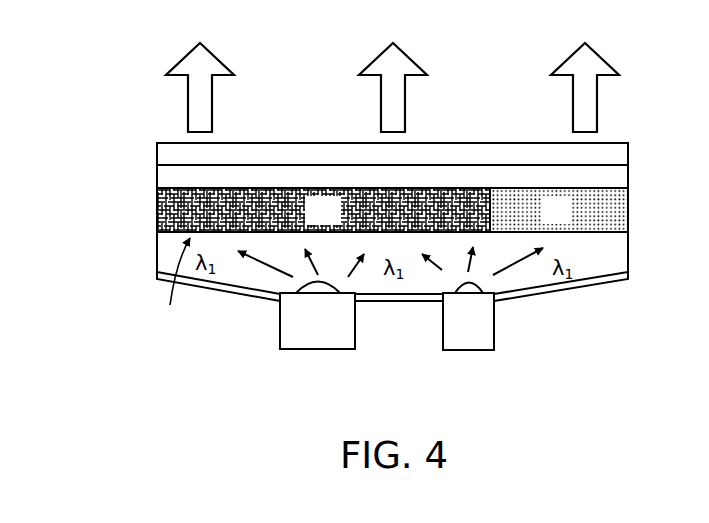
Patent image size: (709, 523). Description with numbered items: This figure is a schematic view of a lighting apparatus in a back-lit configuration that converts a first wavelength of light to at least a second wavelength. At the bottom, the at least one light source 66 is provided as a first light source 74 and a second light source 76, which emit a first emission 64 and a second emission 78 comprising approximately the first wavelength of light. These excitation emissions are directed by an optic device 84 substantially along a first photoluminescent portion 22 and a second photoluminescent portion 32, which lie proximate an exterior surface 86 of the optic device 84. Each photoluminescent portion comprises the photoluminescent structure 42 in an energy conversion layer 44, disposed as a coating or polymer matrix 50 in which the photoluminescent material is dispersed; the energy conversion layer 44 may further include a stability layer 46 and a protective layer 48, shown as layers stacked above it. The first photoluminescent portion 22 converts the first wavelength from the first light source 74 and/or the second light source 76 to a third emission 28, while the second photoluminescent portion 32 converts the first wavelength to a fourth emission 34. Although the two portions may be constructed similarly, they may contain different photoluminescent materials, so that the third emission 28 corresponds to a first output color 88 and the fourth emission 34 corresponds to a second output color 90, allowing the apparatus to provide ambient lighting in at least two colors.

The first photoluminescent portion 22 is at (569, 222).
The third emission 28 is at (266, 87).
The second photoluminescent portion 32 is at (338, 222).
The fourth emission 34 is at (557, 87).
The photoluminescent structure 42 is at (146, 200).
The energy conversion layer 44 is at (420, 210).
The stability layer 46 is at (623, 173).
The protective layer 48 is at (623, 153).
The polymer matrix 50 is at (145, 228).
The first emission 64 is at (293, 277).
The light source 66 is at (392, 340).
The first light source 74 is at (313, 335).
The second light source 76 is at (465, 335).
The second emission 78 is at (440, 268).
The optic device 84 is at (163, 255).
The exterior surface 86 is at (174, 283).
The first output color 88 is at (190, 107).
The second output color 90 is at (575, 107).